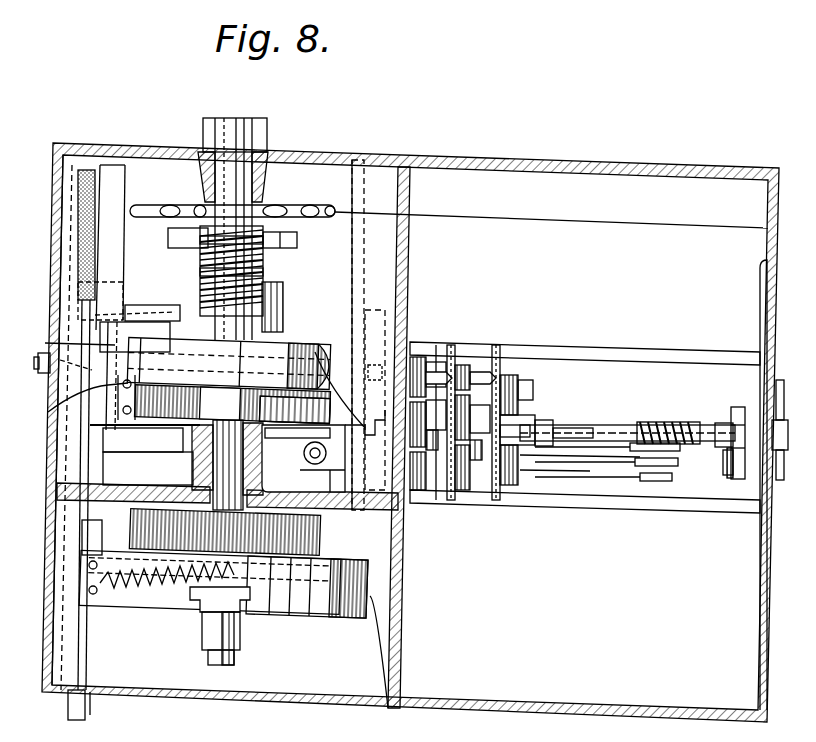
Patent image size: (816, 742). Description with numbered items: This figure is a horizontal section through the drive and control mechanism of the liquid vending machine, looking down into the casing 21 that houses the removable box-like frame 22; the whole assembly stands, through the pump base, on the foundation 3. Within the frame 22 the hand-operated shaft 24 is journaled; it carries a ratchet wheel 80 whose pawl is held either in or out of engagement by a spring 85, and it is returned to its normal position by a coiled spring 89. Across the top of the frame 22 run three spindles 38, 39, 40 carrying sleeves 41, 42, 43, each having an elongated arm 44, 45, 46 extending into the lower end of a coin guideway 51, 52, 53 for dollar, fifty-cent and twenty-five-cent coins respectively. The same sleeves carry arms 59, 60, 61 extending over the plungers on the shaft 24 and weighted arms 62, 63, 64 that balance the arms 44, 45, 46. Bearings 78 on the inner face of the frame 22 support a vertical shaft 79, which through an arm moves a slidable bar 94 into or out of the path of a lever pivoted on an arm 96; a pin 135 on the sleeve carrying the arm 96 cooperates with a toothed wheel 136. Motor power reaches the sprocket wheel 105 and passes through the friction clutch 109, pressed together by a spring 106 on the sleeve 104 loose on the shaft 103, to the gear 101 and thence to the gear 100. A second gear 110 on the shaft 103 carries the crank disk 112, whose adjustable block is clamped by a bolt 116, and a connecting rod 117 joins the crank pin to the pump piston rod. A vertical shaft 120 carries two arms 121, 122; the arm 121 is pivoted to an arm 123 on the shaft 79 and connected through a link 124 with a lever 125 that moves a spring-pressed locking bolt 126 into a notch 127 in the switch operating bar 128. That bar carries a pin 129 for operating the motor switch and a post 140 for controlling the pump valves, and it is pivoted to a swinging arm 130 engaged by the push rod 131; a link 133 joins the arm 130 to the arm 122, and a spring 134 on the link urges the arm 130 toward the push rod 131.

The foundation 3 is at (787, 430).
The casing 21 is at (493, 166).
The box-like frame 22 is at (668, 352).
The shaft 24 is at (610, 425).
The spindle 38 is at (412, 340).
The spindle 39 is at (455, 342).
The spindle 40 is at (502, 342).
The sleeve 41 is at (417, 492).
The sleeve 42 is at (462, 494).
The sleeve 43 is at (510, 490).
The arm 44 is at (550, 485).
The arm 45 is at (580, 462).
The arm 46 is at (568, 425).
The guide-way 51 is at (682, 450).
The guide-way 52 is at (680, 464).
The guide-way 53 is at (665, 481).
The arm 59 is at (433, 445).
The arm 60 is at (477, 449).
The arm 61 is at (512, 438).
The weighted arm 62 is at (375, 400).
The weighted arm 63 is at (428, 358).
The weighted arm 64 is at (470, 360).
The bearings 78 is at (328, 362).
The vertical shaft 79 is at (300, 348).
The ratchet wheel 80 is at (738, 406).
The spring 85 is at (735, 468).
The spring 89 is at (660, 422).
The slidable bar 94 is at (135, 376).
The arm 96 is at (186, 238).
The gear 100 is at (170, 428).
The gear 101 is at (228, 465).
The shaft 103 is at (222, 162).
The sleeve 104 is at (205, 272).
The sprocket wheel 105 is at (449, 220).
The spring 106 is at (264, 266).
The friction clutch 109 is at (207, 352).
The gear 110 is at (318, 540).
The crank disk 112 is at (283, 608).
The bolt 116 is at (200, 608).
The connecting rod 117 is at (236, 645).
The vertical shaft 120 is at (304, 456).
The arm 121 is at (303, 458).
The arm 122 is at (308, 483).
The arm 123 is at (362, 370).
The link 124 is at (225, 425).
The lever 125 is at (75, 397).
The locking bolt 126 is at (148, 305).
The notch 127 is at (58, 344).
The switch operating bar 128 is at (97, 214).
The pin 129 is at (103, 282).
The swinging arm 130 is at (98, 545).
The push rod 131 is at (67, 708).
The link 133 is at (210, 582).
The spring 134 is at (161, 583).
The pin 135 is at (166, 238).
The wheel 136 is at (292, 243).
The post 140 is at (42, 370).